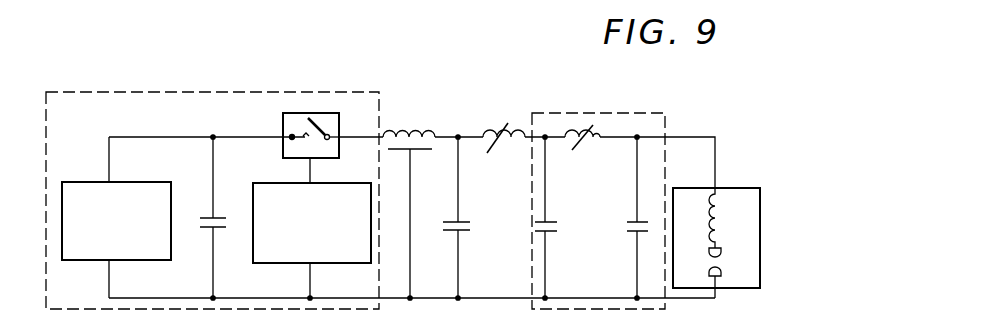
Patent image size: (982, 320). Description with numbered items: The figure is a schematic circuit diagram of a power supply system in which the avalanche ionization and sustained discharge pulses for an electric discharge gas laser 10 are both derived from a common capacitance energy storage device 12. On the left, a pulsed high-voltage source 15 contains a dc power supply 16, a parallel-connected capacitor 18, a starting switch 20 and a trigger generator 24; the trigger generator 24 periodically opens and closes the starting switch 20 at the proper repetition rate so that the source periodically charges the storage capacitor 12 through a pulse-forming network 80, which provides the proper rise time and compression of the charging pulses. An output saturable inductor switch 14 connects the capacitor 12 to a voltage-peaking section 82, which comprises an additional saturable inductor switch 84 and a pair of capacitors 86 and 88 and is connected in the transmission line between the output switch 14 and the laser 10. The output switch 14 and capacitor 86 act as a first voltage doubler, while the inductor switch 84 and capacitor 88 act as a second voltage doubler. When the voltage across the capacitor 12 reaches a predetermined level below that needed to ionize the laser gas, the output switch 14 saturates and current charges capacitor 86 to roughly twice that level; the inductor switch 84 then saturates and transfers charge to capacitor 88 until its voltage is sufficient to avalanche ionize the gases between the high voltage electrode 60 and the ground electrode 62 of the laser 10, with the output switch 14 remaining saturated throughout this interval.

The electric discharge gas laser 10 is at (760, 270).
The capacitance energy storage device 12 is at (466, 220).
The output saturable inductor switch 14 is at (510, 130).
The pulsed high-voltage source 15 is at (80, 91).
The power supply 16 is at (93, 181).
The capacitor 18 is at (227, 220).
The starting switch 20 is at (283, 125).
The trigger generator 24 is at (290, 264).
The high voltage electrode 60 is at (720, 250).
The ground electrode 62 is at (720, 271).
The pulse-forming network 80 is at (420, 132).
The voltage-peaking section 82 is at (665, 128).
The saturable inductor switch 84 is at (600, 128).
The capacitance energy storage device 86 is at (552, 220).
The capacitance energy storage device 88 is at (628, 225).